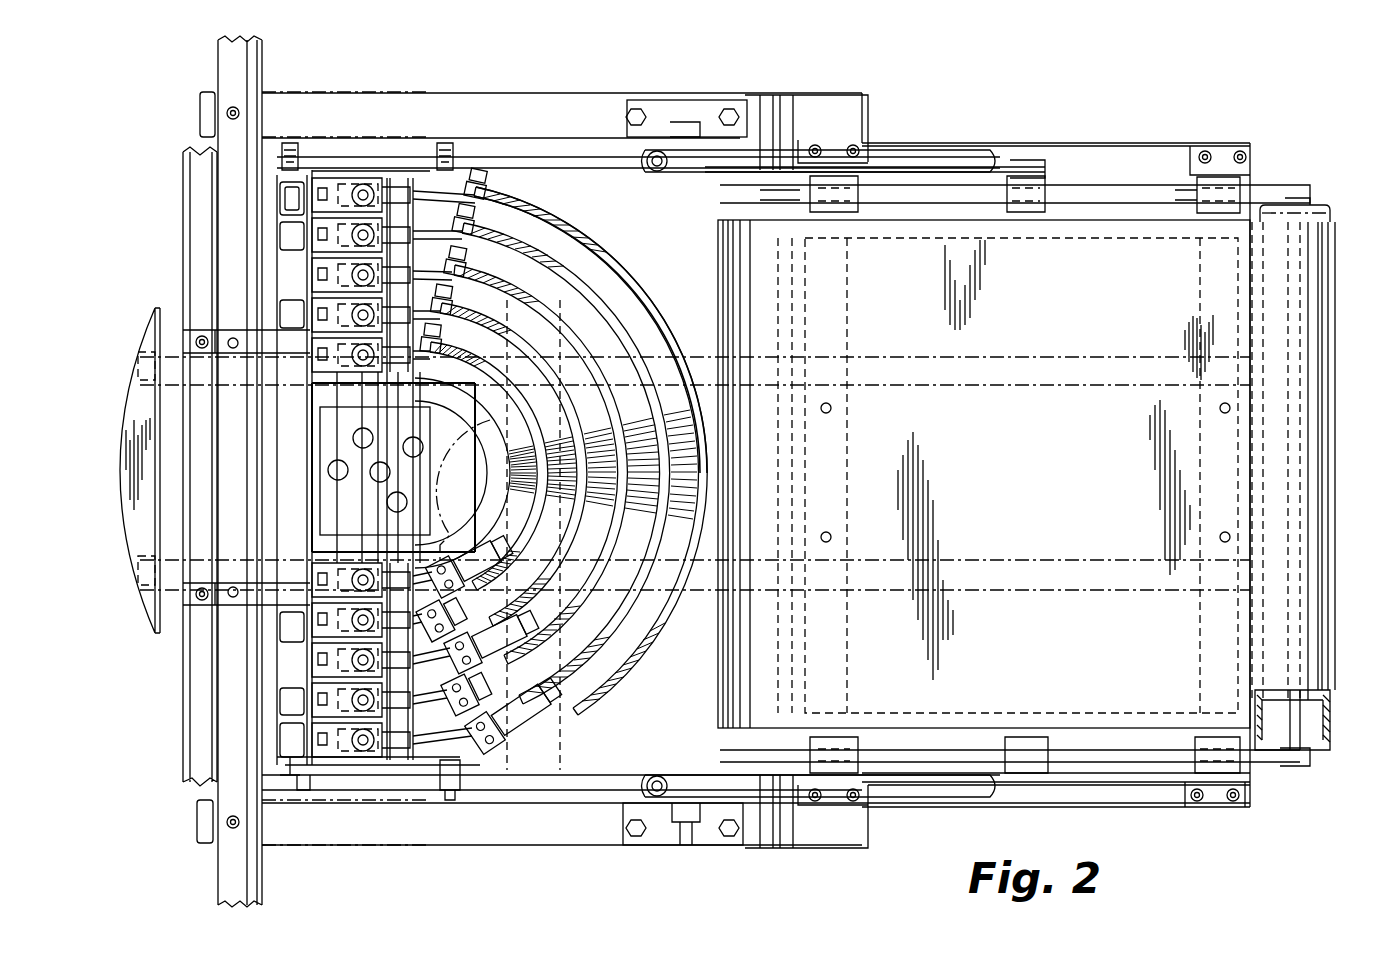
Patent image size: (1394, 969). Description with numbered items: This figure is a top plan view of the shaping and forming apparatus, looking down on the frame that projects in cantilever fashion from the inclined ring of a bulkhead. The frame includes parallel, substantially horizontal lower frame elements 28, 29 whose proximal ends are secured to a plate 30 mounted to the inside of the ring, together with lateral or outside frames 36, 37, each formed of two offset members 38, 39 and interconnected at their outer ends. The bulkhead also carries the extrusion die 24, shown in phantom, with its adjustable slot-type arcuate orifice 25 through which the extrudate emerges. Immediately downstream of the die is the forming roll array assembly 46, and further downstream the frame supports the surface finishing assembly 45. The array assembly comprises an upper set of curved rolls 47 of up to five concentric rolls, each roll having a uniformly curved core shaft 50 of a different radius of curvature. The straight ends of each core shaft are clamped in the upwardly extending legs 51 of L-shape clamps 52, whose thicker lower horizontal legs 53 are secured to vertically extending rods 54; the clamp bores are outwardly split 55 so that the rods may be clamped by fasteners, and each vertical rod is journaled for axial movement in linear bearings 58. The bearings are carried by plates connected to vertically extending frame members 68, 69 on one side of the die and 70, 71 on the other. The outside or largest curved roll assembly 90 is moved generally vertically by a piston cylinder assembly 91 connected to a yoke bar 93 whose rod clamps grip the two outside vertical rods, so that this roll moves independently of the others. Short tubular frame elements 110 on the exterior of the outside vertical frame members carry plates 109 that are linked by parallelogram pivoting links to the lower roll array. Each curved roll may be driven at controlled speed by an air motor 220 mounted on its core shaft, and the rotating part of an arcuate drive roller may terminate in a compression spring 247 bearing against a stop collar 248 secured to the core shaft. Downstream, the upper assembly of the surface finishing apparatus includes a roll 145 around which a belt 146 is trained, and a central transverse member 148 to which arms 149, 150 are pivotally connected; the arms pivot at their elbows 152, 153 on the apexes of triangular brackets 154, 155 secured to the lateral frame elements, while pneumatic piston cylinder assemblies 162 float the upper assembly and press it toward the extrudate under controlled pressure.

The extrusion die 24 is at (443, 422).
The arcuate orifice 25 is at (480, 435).
The lower frame element 28 is at (878, 357).
The lower frame element 29 is at (1030, 598).
The plate 30 is at (141, 610).
The lateral frame 36 is at (936, 140).
The lateral frame 37 is at (976, 808).
The offset member 38 is at (488, 848).
The offset member 39 is at (965, 790).
The surface finishing assembly 45 is at (1322, 203).
The forming roll array assembly 46 is at (584, 238).
The upper set of curved rolls 47 is at (649, 302).
The core shaft 50 is at (430, 193).
The upwardly extending leg 51 is at (418, 183).
The L-shape clamp 52 is at (395, 170).
The lower horizontal leg 53 is at (345, 180).
The vertical rod 54 is at (352, 760).
The split 55 is at (395, 183).
The linear bearing 58 is at (370, 758).
The vertical frame member 68 is at (302, 250).
The vertical frame member 69 is at (302, 302).
The vertical frame member 70 is at (300, 642).
The vertical frame member 71 is at (300, 690).
The largest curved roll assembly 90 is at (622, 679).
The piston cylinder assembly 91 is at (418, 447).
The yoke bar 93 is at (425, 515).
The plate 109 is at (302, 768).
The tubular frame element 110 is at (282, 757).
The roll 145 is at (1335, 748).
The belt 146 is at (1340, 470).
The central transverse member 148 is at (1045, 765).
The arm 149 is at (895, 166).
The arm 150 is at (915, 783).
The pivot 152 is at (690, 124).
The pivot 153 is at (700, 828).
The triangular bracket 154 is at (672, 100).
The triangular bracket 155 is at (665, 812).
The pneumatic piston cylinder assembly 162 is at (705, 168).
The air motor 220 is at (545, 746).
The compression spring 247 is at (503, 205).
The stop collar 248 is at (460, 212).